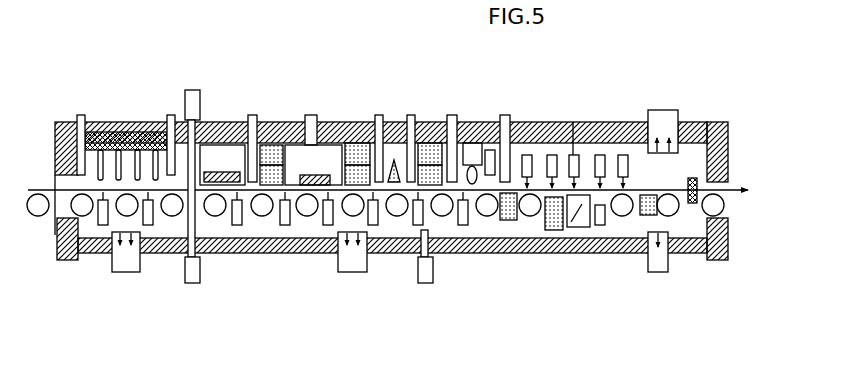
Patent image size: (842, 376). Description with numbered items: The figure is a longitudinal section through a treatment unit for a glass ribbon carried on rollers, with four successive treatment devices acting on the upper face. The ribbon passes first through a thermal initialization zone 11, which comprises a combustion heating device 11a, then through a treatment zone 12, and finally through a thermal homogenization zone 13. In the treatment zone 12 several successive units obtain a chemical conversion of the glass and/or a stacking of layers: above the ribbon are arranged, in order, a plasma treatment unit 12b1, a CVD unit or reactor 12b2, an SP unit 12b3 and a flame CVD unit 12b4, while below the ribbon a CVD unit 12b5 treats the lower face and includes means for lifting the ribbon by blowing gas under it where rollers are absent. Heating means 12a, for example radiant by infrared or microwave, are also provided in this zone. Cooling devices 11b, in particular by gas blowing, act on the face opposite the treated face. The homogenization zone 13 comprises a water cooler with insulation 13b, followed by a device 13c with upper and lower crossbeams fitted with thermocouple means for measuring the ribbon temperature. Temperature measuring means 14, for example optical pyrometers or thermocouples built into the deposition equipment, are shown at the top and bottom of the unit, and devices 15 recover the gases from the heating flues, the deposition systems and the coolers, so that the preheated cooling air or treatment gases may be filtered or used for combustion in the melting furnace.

The thermal initialization zone 11 is at (60, 112).
The combustion heating device 11a is at (116, 132).
The cooling devices 11b is at (573, 122).
The treatment zone 12 is at (587, 53).
The heating means 12a is at (428, 122).
The plasma treatment unit 12b1 is at (225, 160).
The CVD unit 12b2 is at (312, 150).
The SP unit 12b3 is at (385, 140).
The flame CVD unit 12b4 is at (468, 142).
The CVD unit 12b5 is at (578, 228).
The thermal homogenization zone 13 is at (730, 232).
The water cooler with insulation 13b is at (640, 216).
The device with upper and lower crossbeams 13c is at (693, 255).
The temperature measuring means 14 is at (192, 283).
The gas recovery devices 15 is at (250, 112).